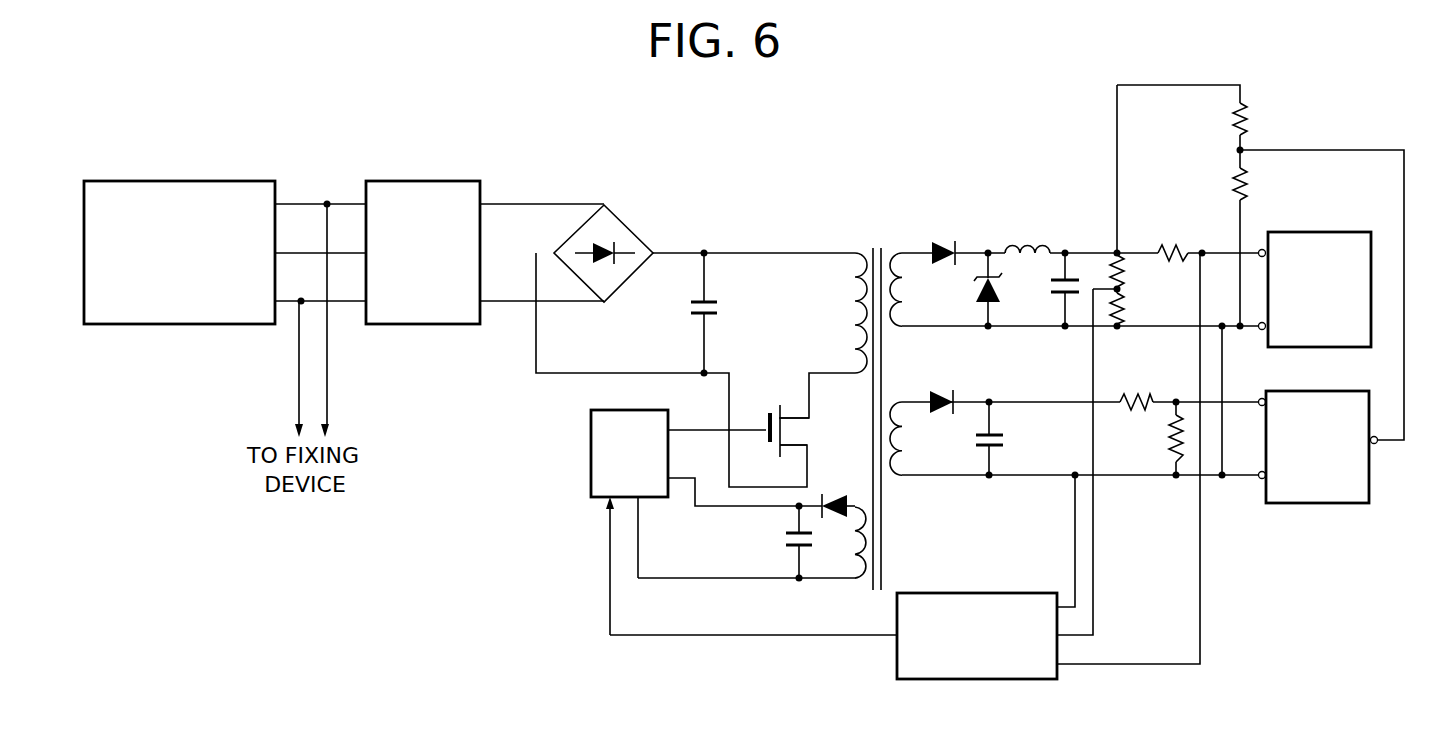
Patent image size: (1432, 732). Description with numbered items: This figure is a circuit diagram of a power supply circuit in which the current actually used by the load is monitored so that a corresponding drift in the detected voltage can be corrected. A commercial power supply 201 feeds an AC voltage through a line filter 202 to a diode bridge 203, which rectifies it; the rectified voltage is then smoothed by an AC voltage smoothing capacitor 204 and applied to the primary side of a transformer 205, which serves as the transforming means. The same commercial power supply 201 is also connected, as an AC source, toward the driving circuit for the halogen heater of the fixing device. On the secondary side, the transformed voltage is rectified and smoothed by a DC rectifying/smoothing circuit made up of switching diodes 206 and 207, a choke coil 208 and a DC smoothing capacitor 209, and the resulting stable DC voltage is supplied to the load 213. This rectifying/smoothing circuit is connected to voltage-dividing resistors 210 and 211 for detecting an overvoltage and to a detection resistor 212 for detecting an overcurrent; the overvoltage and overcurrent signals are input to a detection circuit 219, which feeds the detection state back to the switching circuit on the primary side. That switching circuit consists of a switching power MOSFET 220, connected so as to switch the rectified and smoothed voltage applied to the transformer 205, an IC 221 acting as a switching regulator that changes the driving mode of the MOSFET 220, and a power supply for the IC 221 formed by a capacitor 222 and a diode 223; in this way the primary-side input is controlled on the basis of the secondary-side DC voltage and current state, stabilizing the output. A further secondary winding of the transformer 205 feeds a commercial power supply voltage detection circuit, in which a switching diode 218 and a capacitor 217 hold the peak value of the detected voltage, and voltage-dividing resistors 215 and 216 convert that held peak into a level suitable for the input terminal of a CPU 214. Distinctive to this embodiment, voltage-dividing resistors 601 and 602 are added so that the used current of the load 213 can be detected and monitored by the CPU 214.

The commercial power supply 201 is at (252, 181).
The line filter 202 is at (456, 181).
The diode bridge 203 is at (617, 213).
The AC voltage smoothing capacitor 204 is at (722, 307).
The transformer 205 is at (877, 248).
The switching diode 206 is at (946, 241).
The switching diode 207 is at (978, 305).
The choke coil 208 is at (1030, 245).
The DC smoothing capacitor 209 is at (1053, 297).
The voltage-dividing resistor 210 is at (1128, 266).
The voltage-dividing resistor 211 is at (1132, 309).
The detection resistor 212 is at (1178, 244).
The load 213 is at (1355, 232).
The CPU 214 is at (1287, 505).
The voltage-dividing resistor 215 is at (1162, 444).
The voltage-dividing resistor 216 is at (1137, 392).
The capacitor 217 is at (1008, 444).
The switching diode 218 is at (932, 392).
The detection circuit 219 is at (1027, 593).
The switching power MOSFET 220 is at (770, 408).
The IC 221 is at (588, 480).
The capacitor 222 is at (778, 541).
The diode 223 is at (838, 492).
The voltage-dividing resistor 601 is at (1252, 116).
The voltage-dividing resistor 602 is at (1252, 181).